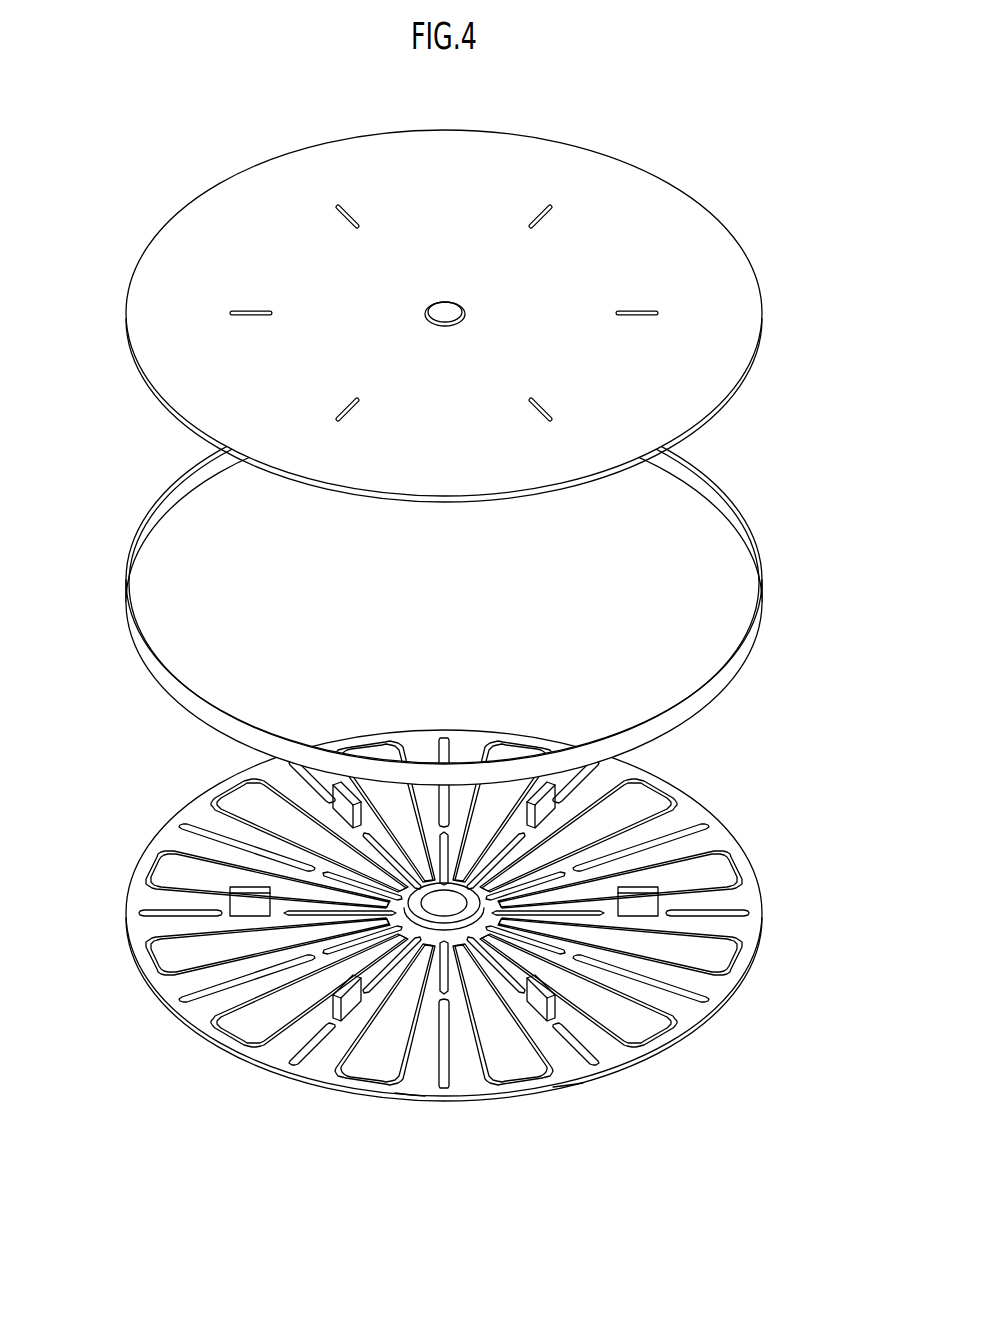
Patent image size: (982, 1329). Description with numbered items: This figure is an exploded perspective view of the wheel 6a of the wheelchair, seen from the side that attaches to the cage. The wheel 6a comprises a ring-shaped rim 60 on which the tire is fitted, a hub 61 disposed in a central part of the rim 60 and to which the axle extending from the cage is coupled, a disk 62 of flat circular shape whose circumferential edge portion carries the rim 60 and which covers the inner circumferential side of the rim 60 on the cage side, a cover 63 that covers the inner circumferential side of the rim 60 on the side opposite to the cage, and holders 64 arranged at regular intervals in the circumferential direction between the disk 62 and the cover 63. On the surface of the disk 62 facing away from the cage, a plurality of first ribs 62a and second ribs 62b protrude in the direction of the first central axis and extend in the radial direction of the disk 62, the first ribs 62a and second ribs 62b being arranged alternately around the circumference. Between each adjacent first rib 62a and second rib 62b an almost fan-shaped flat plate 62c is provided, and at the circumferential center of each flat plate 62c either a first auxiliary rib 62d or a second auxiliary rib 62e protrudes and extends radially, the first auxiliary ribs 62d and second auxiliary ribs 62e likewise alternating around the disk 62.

The wheel 6a is at (722, 122).
The ring-shaped rim 60 is at (715, 490).
The hub 61 is at (690, 813).
The disk 62 is at (760, 858).
The first rib 62a is at (655, 1025).
The second rib 62b is at (735, 955).
The flat plate 62c is at (410, 1085).
The first auxiliary rib 62d is at (447, 1090).
The second auxiliary rib 62e is at (600, 1060).
The cover 63 is at (712, 240).
The holder 64 is at (340, 803).